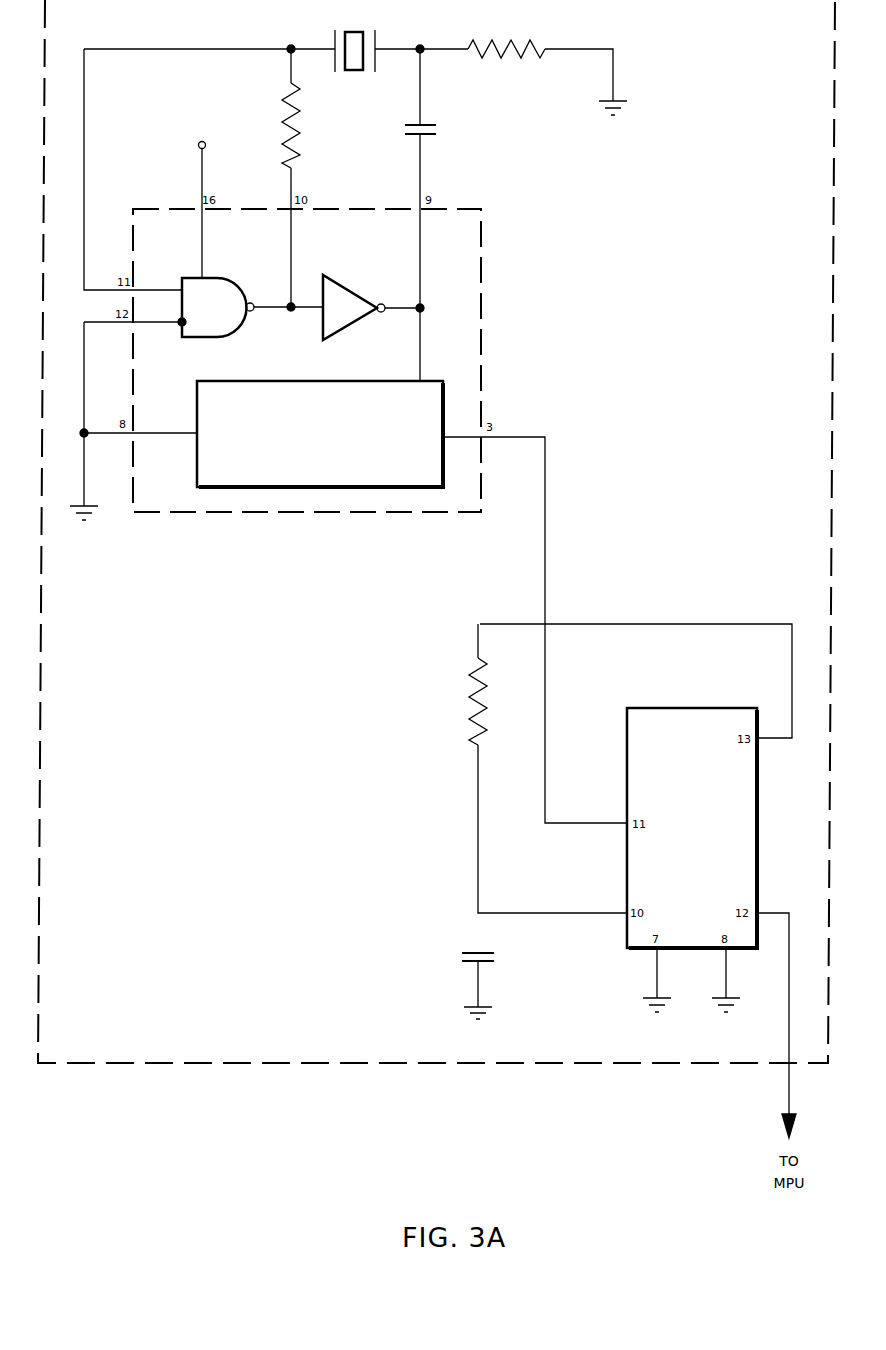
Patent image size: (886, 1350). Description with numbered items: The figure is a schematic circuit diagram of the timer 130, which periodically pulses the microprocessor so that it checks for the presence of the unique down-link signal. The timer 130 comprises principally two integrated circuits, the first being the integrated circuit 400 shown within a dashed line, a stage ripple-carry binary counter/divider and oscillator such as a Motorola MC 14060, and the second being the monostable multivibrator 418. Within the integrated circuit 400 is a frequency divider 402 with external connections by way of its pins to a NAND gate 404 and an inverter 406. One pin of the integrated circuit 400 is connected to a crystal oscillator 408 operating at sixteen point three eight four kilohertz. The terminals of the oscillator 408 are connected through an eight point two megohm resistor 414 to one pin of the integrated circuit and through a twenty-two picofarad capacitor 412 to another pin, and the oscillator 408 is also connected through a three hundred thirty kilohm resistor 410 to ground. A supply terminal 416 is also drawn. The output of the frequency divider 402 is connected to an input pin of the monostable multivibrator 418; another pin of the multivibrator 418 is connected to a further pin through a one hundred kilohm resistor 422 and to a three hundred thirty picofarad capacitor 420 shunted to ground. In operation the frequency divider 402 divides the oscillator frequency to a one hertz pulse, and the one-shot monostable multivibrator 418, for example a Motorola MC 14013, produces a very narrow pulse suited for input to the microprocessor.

The timer 130 is at (201, 1076).
The integrated circuit 400 is at (499, 304).
The frequency divider 402 is at (197, 455).
The NAND gate 404 is at (204, 338).
The inverter 406 is at (342, 283).
The crystal oscillator 408 is at (378, 44).
The resistor 410 is at (533, 48).
The capacitor 412 is at (422, 124).
The resistor 414 is at (283, 112).
The supply voltage terminal 416 is at (198, 145).
The monostable multivibrator 418 is at (633, 950).
The capacitor 420 is at (482, 953).
The resistor 422 is at (474, 702).